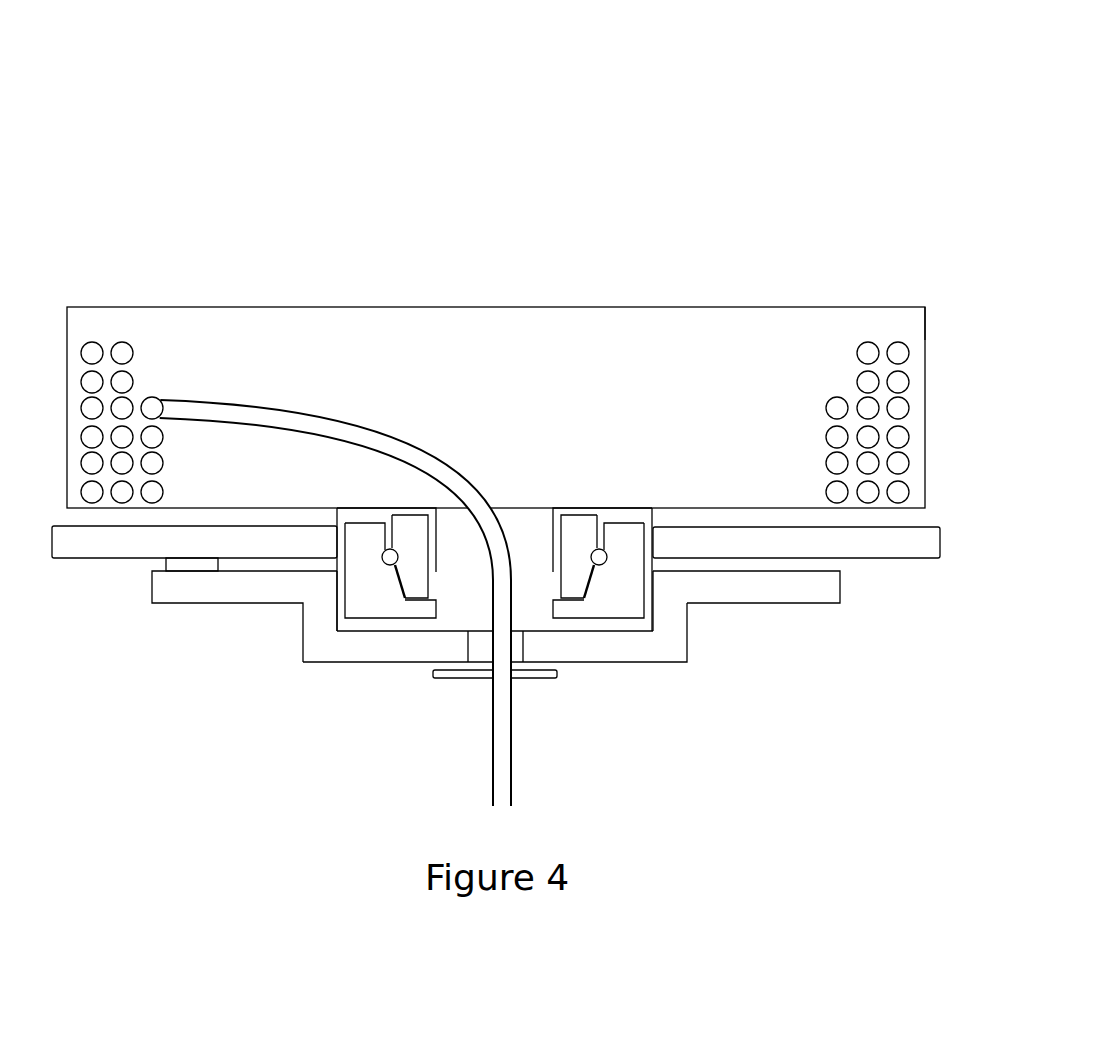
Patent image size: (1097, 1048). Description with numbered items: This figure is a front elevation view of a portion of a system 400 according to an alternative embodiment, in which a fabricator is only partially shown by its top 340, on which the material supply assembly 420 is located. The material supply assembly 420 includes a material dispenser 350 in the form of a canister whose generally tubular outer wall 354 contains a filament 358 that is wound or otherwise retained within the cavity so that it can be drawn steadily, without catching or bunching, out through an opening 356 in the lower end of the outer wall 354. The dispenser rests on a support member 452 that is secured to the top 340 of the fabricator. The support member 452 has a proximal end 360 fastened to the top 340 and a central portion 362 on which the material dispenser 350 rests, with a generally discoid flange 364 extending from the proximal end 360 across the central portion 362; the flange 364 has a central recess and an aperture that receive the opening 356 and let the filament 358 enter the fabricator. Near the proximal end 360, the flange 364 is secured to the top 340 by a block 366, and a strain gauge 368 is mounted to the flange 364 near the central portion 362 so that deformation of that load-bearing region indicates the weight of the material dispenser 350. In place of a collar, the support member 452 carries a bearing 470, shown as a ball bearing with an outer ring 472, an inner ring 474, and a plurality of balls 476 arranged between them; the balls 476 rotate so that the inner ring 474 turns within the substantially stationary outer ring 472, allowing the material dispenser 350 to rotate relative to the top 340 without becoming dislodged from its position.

The system 400 is at (679, 77).
The material supply assembly 420 is at (793, 238).
The material dispenser 350 is at (291, 278).
The outer wall 354 is at (925, 333).
The filament 358 is at (397, 455).
The top 340 is at (207, 535).
The opening 356 is at (560, 543).
The block 366 is at (193, 565).
The proximal end 360 is at (239, 694).
The flange 364 is at (677, 648).
The support member 452 is at (668, 725).
The central portion 362 is at (592, 704).
The strain gauge 368 is at (460, 681).
The outer ring 472 is at (355, 545).
The inner ring 474 is at (408, 533).
The balls 476 is at (388, 561).
The bearing 470 is at (613, 511).